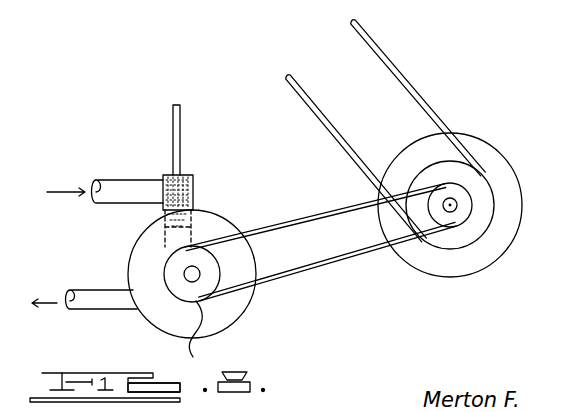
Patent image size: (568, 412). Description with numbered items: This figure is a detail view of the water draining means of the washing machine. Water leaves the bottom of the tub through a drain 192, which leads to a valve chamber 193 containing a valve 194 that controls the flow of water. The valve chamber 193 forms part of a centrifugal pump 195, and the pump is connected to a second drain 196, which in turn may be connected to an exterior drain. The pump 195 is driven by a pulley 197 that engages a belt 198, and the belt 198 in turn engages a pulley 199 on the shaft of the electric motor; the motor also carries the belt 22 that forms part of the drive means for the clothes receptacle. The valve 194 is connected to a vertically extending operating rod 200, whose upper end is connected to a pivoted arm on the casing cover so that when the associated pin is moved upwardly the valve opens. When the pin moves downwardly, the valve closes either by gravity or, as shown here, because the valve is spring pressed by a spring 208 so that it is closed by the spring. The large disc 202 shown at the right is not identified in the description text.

The belt 22 is at (413, 91).
The drain 192 is at (121, 182).
The valve chamber 193 is at (200, 190).
The valve 194 is at (195, 211).
The centrifugal pump 195 is at (180, 338).
The drain 196 is at (110, 309).
The pulley 197 is at (207, 332).
The belt 198 is at (322, 265).
The pulley 199 is at (465, 217).
The operating rod 200 is at (181, 131).
The driven disc 202 is at (508, 177).
The spring 208 is at (196, 177).